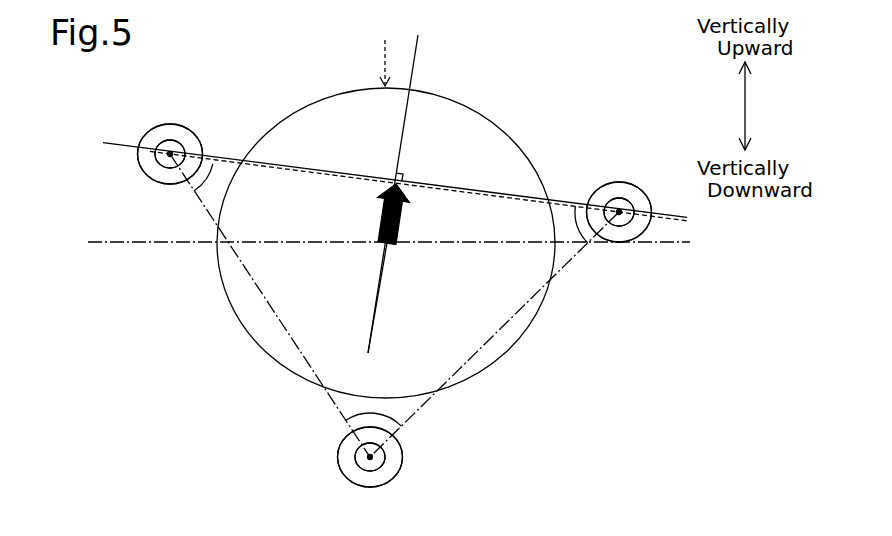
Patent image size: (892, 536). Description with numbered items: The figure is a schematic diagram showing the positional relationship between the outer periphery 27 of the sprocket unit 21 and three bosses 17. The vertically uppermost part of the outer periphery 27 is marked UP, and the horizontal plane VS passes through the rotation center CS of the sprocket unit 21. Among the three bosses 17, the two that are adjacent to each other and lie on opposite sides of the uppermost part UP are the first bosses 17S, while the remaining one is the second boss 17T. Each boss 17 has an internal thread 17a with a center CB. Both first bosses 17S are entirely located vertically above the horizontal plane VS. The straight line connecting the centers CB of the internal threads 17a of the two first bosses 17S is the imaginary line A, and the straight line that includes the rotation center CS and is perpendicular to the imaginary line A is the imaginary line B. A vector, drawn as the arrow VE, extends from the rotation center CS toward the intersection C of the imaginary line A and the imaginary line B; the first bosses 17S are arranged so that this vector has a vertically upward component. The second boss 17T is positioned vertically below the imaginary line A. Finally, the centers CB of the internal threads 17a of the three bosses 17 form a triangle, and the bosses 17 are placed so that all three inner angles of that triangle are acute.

The outer periphery 27 is at (392, 235).
The sprocket unit 21 is at (477, 110).
The boss 17 is at (397, 295).
The first boss 17S is at (170, 124).
The second boss 17T is at (338, 455).
The internal thread 17a is at (161, 148).
The center of internal thread CB is at (198, 143).
The horizontal plane VS is at (108, 242).
The vector VE is at (381, 219).
The rotation center CS is at (385, 244).
The imaginary line A is at (456, 195).
The imaginary line B is at (402, 132).
The intersection C is at (395, 180).
The vertically uppermost part UP is at (384, 52).